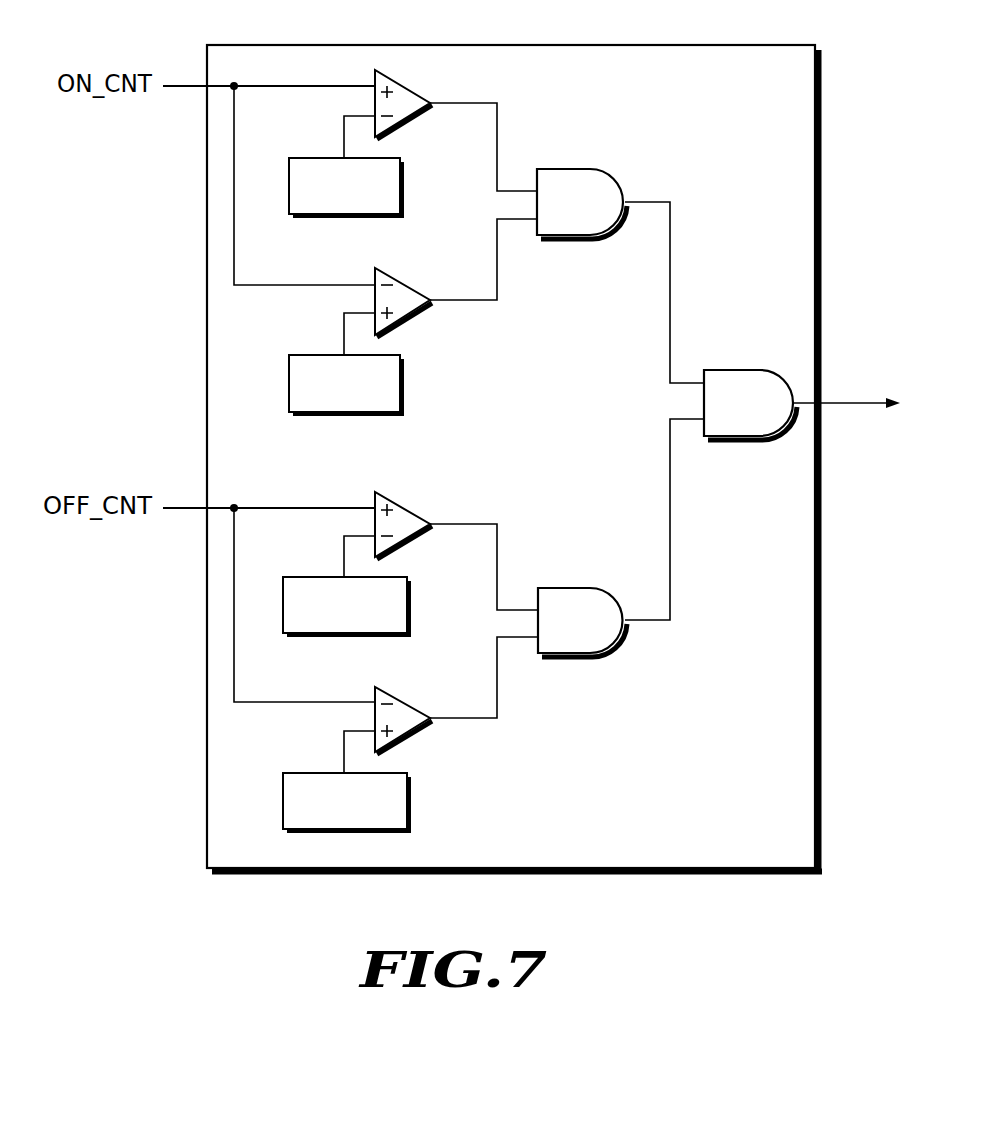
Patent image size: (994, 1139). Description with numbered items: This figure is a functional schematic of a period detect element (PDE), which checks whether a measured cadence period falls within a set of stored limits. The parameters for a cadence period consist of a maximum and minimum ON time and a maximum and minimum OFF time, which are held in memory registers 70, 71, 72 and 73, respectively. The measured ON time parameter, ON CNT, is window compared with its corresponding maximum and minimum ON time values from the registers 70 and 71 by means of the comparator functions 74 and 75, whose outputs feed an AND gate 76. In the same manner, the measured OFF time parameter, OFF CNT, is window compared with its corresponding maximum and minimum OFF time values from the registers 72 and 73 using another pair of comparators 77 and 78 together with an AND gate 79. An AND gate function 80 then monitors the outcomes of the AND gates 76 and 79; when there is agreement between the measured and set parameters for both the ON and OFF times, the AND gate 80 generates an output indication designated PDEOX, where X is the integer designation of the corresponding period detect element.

The memory register 70 is at (318, 355).
The memory register 71 is at (318, 158).
The memory register 72 is at (318, 773).
The memory register 73 is at (318, 577).
The comparator function 74 is at (410, 82).
The comparator function 75 is at (393, 280).
The AND gate 76 is at (566, 170).
The comparator 77 is at (393, 697).
The comparator 78 is at (396, 503).
The AND gate 79 is at (558, 588).
The AND gate function 80 is at (718, 370).